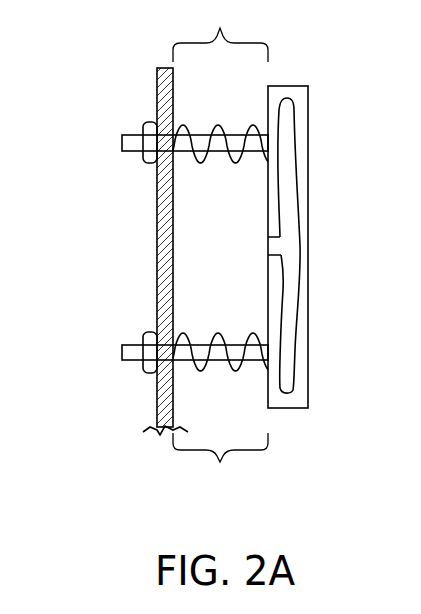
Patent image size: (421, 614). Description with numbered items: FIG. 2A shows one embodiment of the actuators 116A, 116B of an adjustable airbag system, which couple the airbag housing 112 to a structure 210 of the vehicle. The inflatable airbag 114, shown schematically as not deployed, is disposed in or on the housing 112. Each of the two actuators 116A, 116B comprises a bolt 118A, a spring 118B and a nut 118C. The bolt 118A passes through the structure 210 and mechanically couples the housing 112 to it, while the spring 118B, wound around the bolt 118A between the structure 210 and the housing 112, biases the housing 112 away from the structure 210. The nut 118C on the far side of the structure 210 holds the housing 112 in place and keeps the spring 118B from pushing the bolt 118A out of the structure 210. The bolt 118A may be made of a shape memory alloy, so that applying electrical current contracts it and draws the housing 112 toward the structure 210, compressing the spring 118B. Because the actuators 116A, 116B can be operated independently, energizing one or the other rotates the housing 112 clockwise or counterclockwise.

The structure 210 is at (157, 77).
The bolt 118A is at (122, 143).
The spring 118B is at (238, 164).
The nut 118C is at (150, 122).
The actuator 116A is at (220, 31).
The actuator 116B is at (220, 466).
The inflatable airbag 114 is at (296, 181).
The airbag housing 112 is at (308, 380).